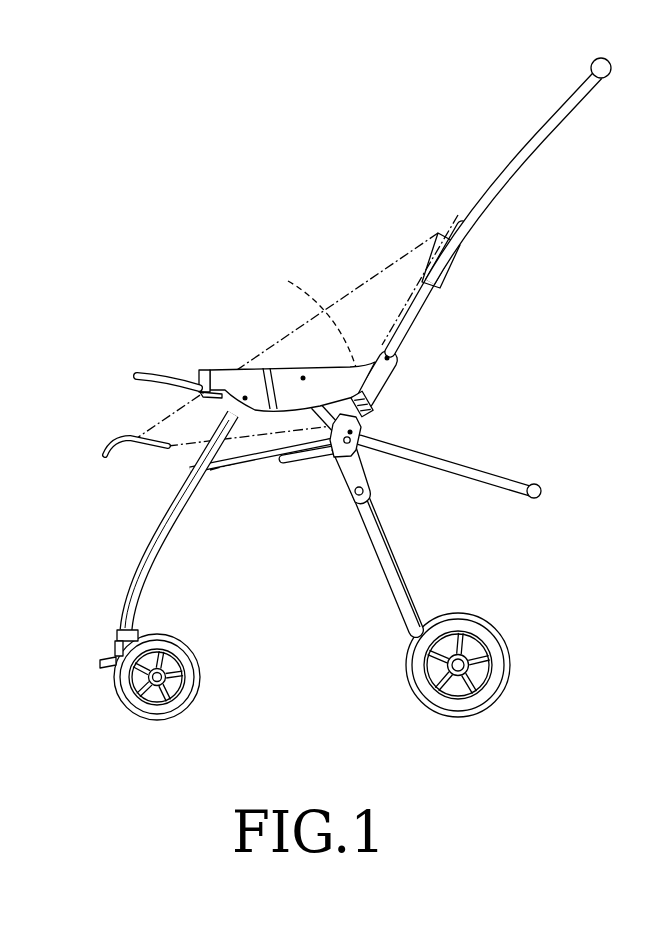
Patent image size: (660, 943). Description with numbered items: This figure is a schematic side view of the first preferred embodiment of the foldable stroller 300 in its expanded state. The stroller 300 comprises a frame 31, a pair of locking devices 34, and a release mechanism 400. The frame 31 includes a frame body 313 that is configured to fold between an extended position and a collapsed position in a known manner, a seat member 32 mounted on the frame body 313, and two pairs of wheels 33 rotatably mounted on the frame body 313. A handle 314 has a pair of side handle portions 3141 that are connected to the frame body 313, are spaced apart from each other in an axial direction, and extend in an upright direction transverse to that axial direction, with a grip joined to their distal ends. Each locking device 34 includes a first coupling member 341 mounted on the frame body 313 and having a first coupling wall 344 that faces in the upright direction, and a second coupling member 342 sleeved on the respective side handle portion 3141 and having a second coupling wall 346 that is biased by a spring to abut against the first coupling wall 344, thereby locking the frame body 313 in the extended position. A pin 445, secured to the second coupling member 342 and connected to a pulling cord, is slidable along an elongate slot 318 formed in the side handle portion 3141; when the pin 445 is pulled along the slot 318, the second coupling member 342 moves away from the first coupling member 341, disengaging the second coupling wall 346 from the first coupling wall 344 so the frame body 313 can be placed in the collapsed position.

The foldable stroller 300 is at (244, 257).
The frame 31 is at (148, 498).
The seat member 32 is at (167, 442).
The wheels 33 is at (138, 708).
The locking devices 34 is at (409, 459).
The frame body 313 is at (396, 567).
The handle 314 is at (417, 314).
The side handle portions 3141 is at (512, 174).
The elongate slot 318 is at (372, 382).
The first coupling member 341 is at (347, 466).
The second coupling member 342 is at (373, 396).
The first coupling wall 344 is at (364, 417).
The second coupling wall 346 is at (372, 435).
The release mechanism 400 is at (586, 61).
The pin 445 is at (301, 324).